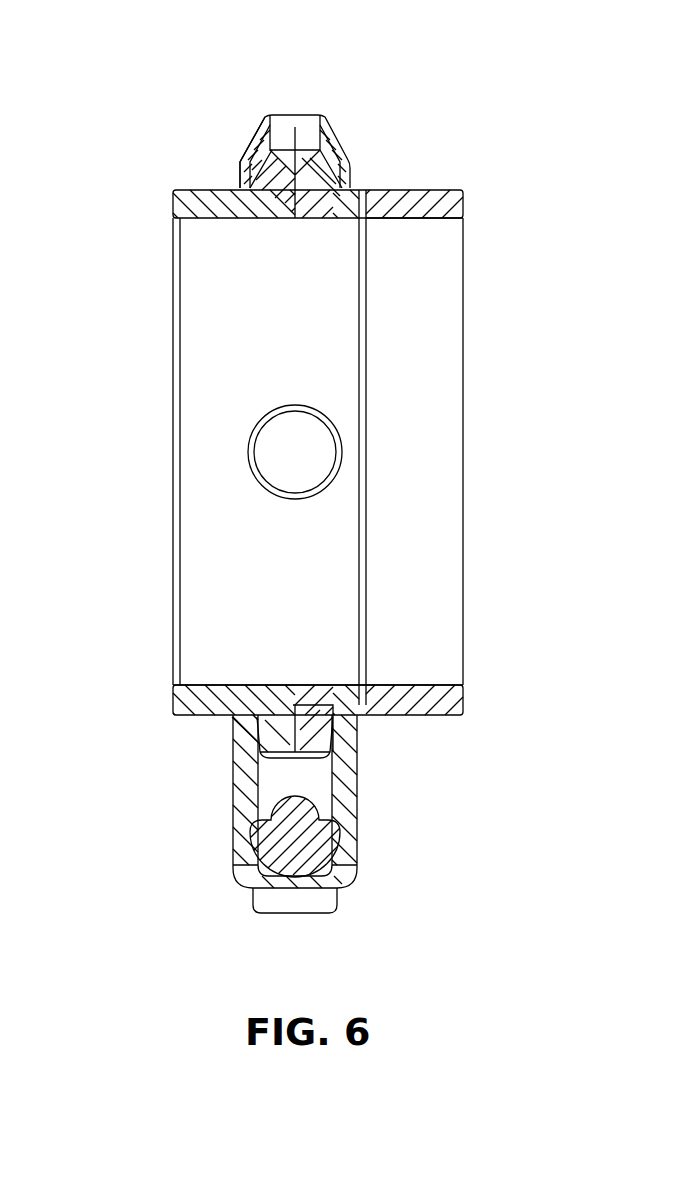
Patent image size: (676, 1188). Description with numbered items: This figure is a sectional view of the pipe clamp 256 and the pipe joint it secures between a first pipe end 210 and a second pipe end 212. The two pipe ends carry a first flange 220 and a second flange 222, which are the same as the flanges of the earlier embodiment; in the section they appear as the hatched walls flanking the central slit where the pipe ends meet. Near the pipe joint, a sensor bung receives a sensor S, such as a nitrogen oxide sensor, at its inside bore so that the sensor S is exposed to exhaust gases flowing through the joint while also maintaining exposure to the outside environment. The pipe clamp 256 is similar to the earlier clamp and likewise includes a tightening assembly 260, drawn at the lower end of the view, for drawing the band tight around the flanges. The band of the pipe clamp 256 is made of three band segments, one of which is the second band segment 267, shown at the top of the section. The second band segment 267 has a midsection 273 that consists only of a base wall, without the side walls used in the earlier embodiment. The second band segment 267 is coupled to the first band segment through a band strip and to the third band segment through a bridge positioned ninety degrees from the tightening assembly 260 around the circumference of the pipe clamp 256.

The midsection 273 is at (290, 120).
The second band segment 267 is at (325, 120).
The second flange 222 is at (263, 165).
The first flange 220 is at (320, 168).
The sensor S is at (295, 448).
The first pipe end 210 is at (403, 540).
The second pipe end 212 is at (207, 578).
The pipe clamp 256 is at (213, 838).
The tightening assembly 260 is at (255, 910).